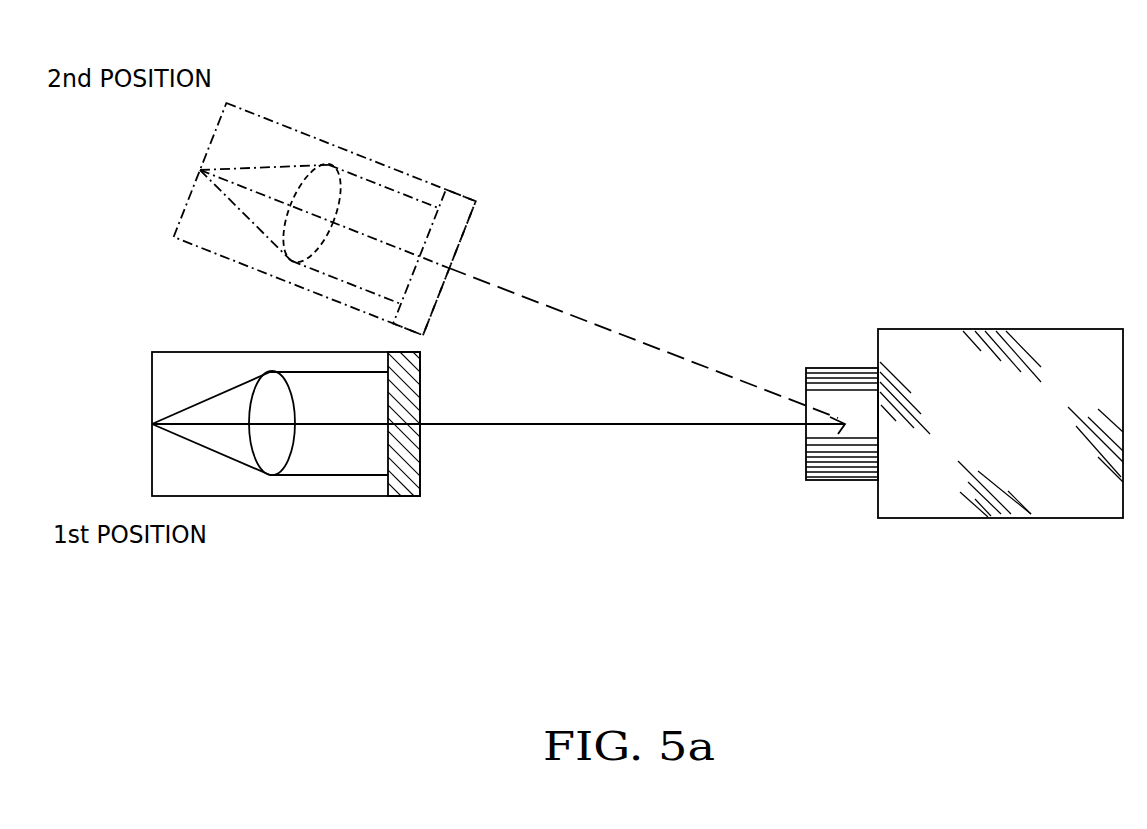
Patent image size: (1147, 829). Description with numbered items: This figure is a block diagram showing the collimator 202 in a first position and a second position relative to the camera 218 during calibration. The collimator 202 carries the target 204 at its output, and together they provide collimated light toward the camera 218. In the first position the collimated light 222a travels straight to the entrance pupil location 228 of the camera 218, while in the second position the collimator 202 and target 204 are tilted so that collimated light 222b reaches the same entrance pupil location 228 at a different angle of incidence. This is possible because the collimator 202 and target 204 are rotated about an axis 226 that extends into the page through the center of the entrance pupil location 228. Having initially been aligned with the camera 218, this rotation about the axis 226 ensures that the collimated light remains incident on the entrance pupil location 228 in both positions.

The collimator 202 is at (177, 352).
The target 204 is at (420, 472).
The camera 218 is at (1075, 330).
The collimated light in the first position 222a is at (603, 427).
The collimated light in the second position 222b is at (615, 330).
The axis of rotation 226 is at (845, 424).
The entrance pupil location 228 is at (843, 367).